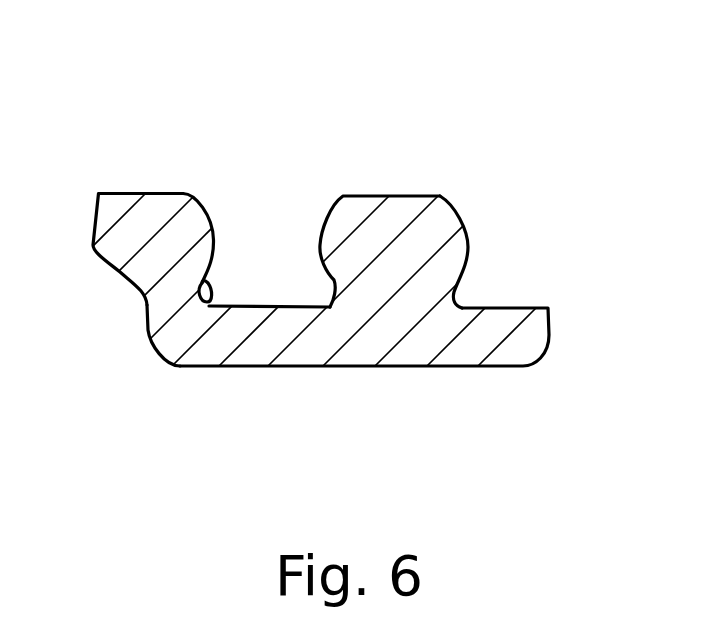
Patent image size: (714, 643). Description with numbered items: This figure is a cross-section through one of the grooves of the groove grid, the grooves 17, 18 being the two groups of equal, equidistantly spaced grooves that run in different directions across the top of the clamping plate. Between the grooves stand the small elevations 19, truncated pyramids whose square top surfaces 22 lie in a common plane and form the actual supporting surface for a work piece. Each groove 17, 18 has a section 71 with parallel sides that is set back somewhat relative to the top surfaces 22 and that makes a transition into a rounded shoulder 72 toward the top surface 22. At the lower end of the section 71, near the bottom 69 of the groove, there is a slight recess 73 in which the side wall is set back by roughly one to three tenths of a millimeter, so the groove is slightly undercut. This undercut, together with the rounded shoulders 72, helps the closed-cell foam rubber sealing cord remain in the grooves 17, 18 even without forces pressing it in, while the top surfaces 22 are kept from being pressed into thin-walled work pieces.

The grooves 17 is at (357, 321).
The grooves 18 is at (357, 321).
The elevations 19 is at (465, 215).
The top surface 22 is at (456, 190).
The bottom 69 is at (313, 395).
The section 71 is at (217, 243).
The rounded shoulder 72 is at (187, 184).
The recess 73 is at (150, 340).